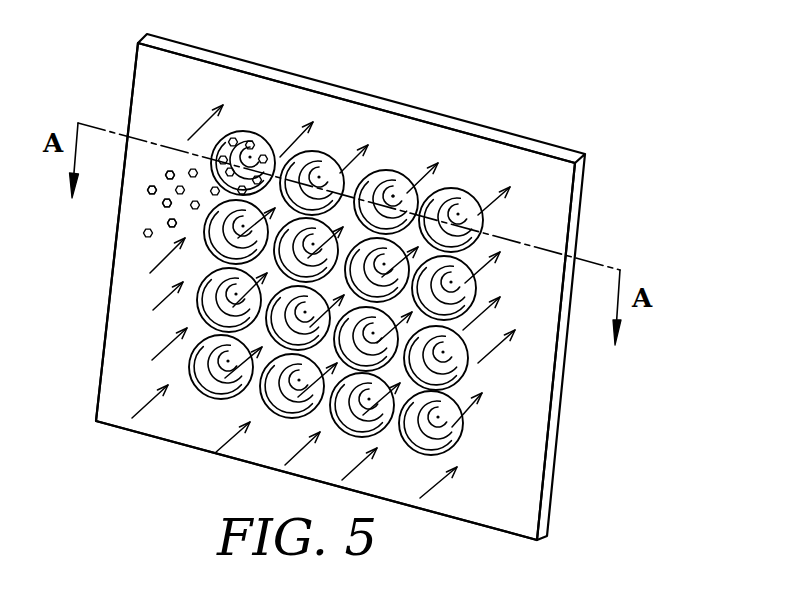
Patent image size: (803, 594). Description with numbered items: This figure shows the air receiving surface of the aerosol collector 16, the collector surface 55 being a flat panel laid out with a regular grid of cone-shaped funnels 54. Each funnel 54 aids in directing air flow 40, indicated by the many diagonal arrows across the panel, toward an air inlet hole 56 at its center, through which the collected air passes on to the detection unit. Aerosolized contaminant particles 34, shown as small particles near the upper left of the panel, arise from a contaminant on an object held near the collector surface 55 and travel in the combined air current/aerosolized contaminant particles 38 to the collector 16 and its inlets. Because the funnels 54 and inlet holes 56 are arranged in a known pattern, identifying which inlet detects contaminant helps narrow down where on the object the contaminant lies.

The aerosol collector 16 is at (341, 70).
The aerosolized contaminant particles 34 is at (148, 237).
The combined air current/aerosolized contaminant particles 38 is at (153, 210).
The air flow 40 is at (490, 357).
The cone-shaped funnels 54 is at (459, 213).
The collector surface 55 is at (523, 226).
The air inlet holes 56 is at (393, 195).